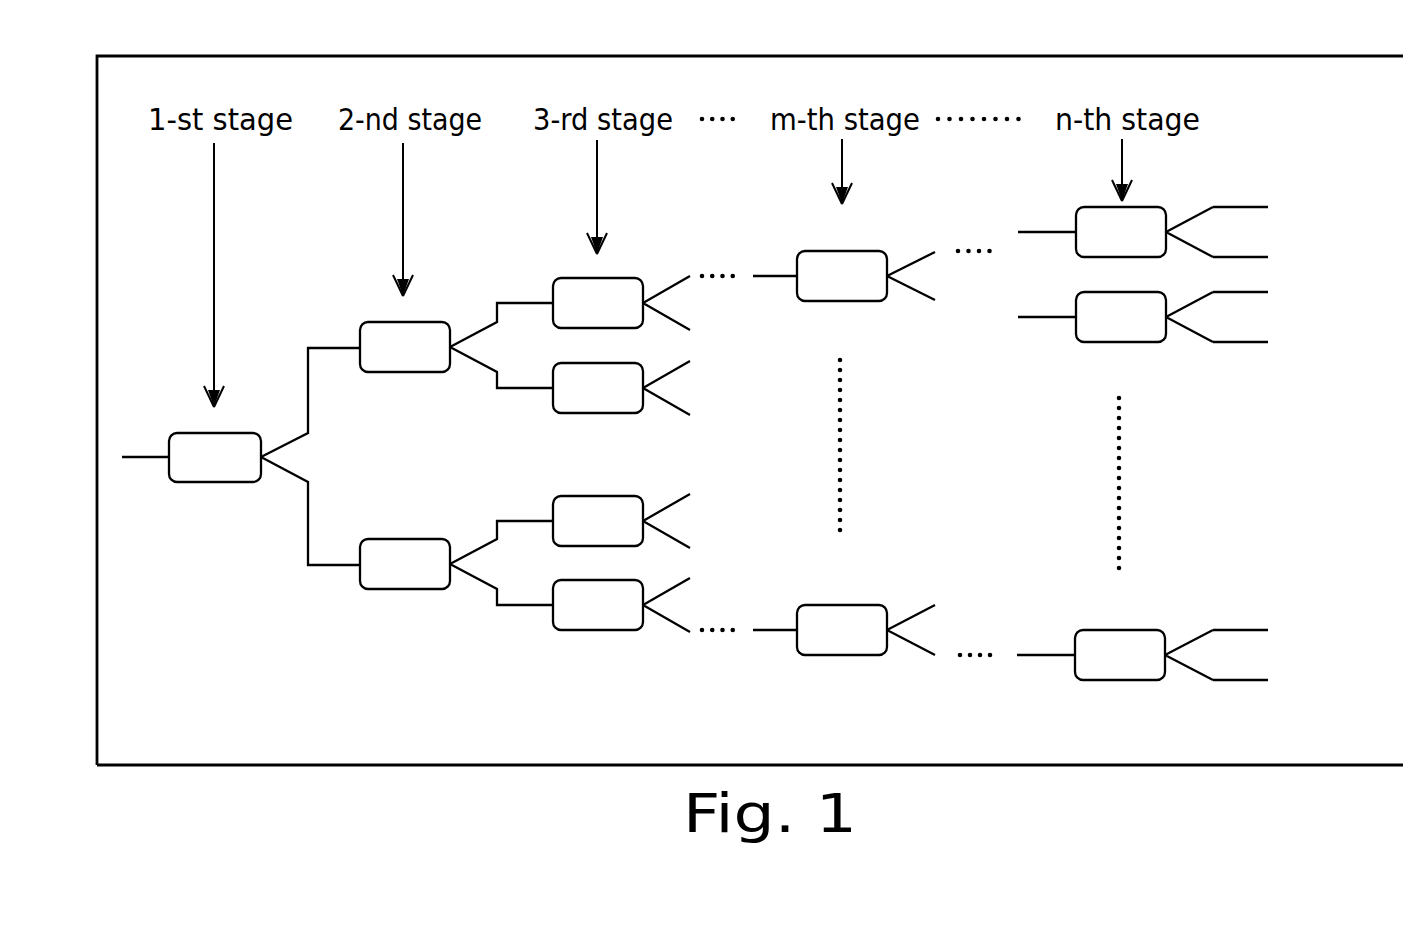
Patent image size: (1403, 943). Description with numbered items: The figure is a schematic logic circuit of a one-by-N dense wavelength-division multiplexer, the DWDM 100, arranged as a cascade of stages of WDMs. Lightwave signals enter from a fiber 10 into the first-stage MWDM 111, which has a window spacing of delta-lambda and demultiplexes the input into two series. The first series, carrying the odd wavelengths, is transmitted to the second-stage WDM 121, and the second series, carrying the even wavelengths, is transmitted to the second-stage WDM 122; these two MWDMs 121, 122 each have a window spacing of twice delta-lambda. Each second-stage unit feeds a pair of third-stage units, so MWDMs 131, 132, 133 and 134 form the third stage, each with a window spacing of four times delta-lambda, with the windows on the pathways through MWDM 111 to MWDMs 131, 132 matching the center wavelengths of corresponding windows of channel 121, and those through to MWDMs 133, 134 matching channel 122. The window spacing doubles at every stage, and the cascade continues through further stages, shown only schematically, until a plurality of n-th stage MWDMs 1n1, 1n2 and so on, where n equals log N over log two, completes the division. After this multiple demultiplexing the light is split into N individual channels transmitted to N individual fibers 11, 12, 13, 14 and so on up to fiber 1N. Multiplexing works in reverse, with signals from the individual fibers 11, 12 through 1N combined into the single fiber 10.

The DWDM 100 is at (706, 50).
The fiber 10 is at (145, 439).
The MWDM 111 is at (215, 479).
The MWDM 121 is at (382, 364).
The MWDM 122 is at (382, 581).
The MWDM 131 is at (572, 299).
The MWDM 132 is at (572, 396).
The MWDM 133 is at (572, 517).
The MWDM 134 is at (572, 614).
The n-th stage MWDM 1n1 is at (1091, 226).
The n-th stage MWDM 1n2 is at (1091, 311).
The fiber 11 is at (1296, 212).
The fiber 12 is at (1296, 257).
The fiber 13 is at (1296, 301).
The fiber 14 is at (1296, 344).
The fiber 1N is at (1296, 665).